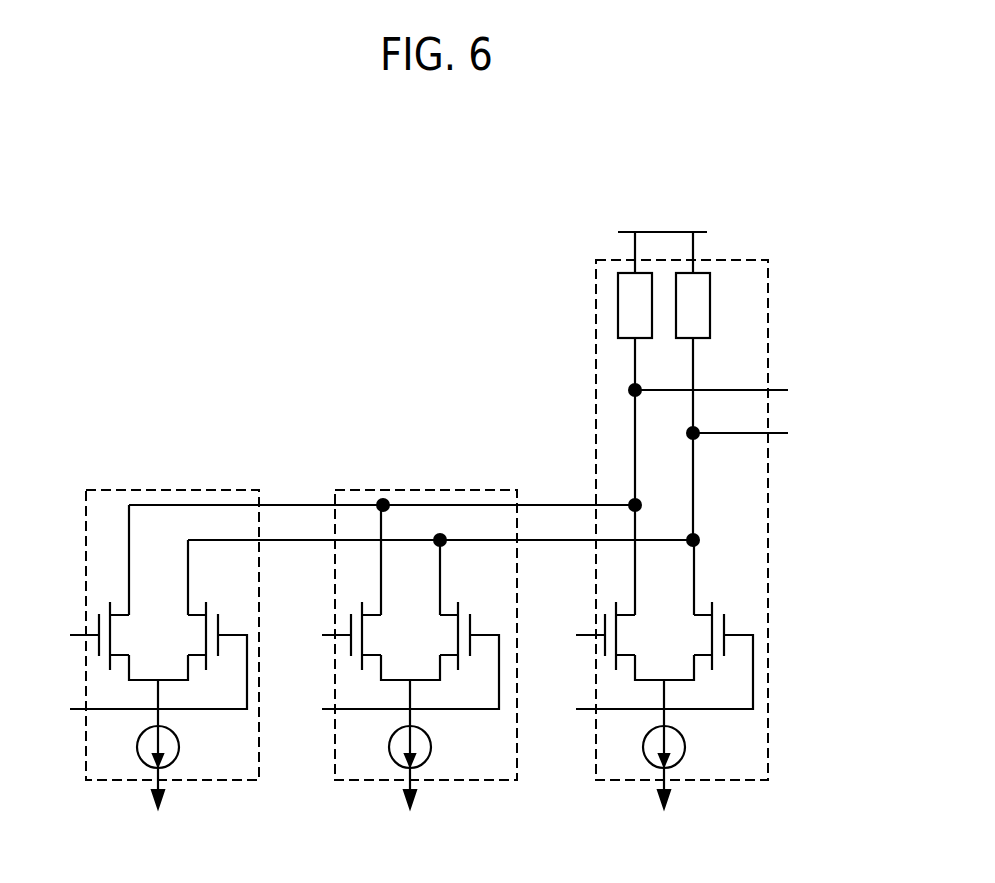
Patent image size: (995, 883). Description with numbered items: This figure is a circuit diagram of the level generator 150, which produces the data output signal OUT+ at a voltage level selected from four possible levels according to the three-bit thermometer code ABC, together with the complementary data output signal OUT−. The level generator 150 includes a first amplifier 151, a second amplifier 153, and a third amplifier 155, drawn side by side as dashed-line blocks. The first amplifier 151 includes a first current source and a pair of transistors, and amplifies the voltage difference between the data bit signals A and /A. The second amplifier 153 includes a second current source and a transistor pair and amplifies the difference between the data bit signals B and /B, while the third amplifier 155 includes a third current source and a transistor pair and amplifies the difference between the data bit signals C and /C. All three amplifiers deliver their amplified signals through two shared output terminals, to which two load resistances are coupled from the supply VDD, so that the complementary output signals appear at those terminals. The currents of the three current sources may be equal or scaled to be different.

The level generator 150 is at (792, 167).
The first amplifier 151 is at (215, 782).
The second amplifier 153 is at (483, 788).
The third amplifier 155 is at (725, 784).